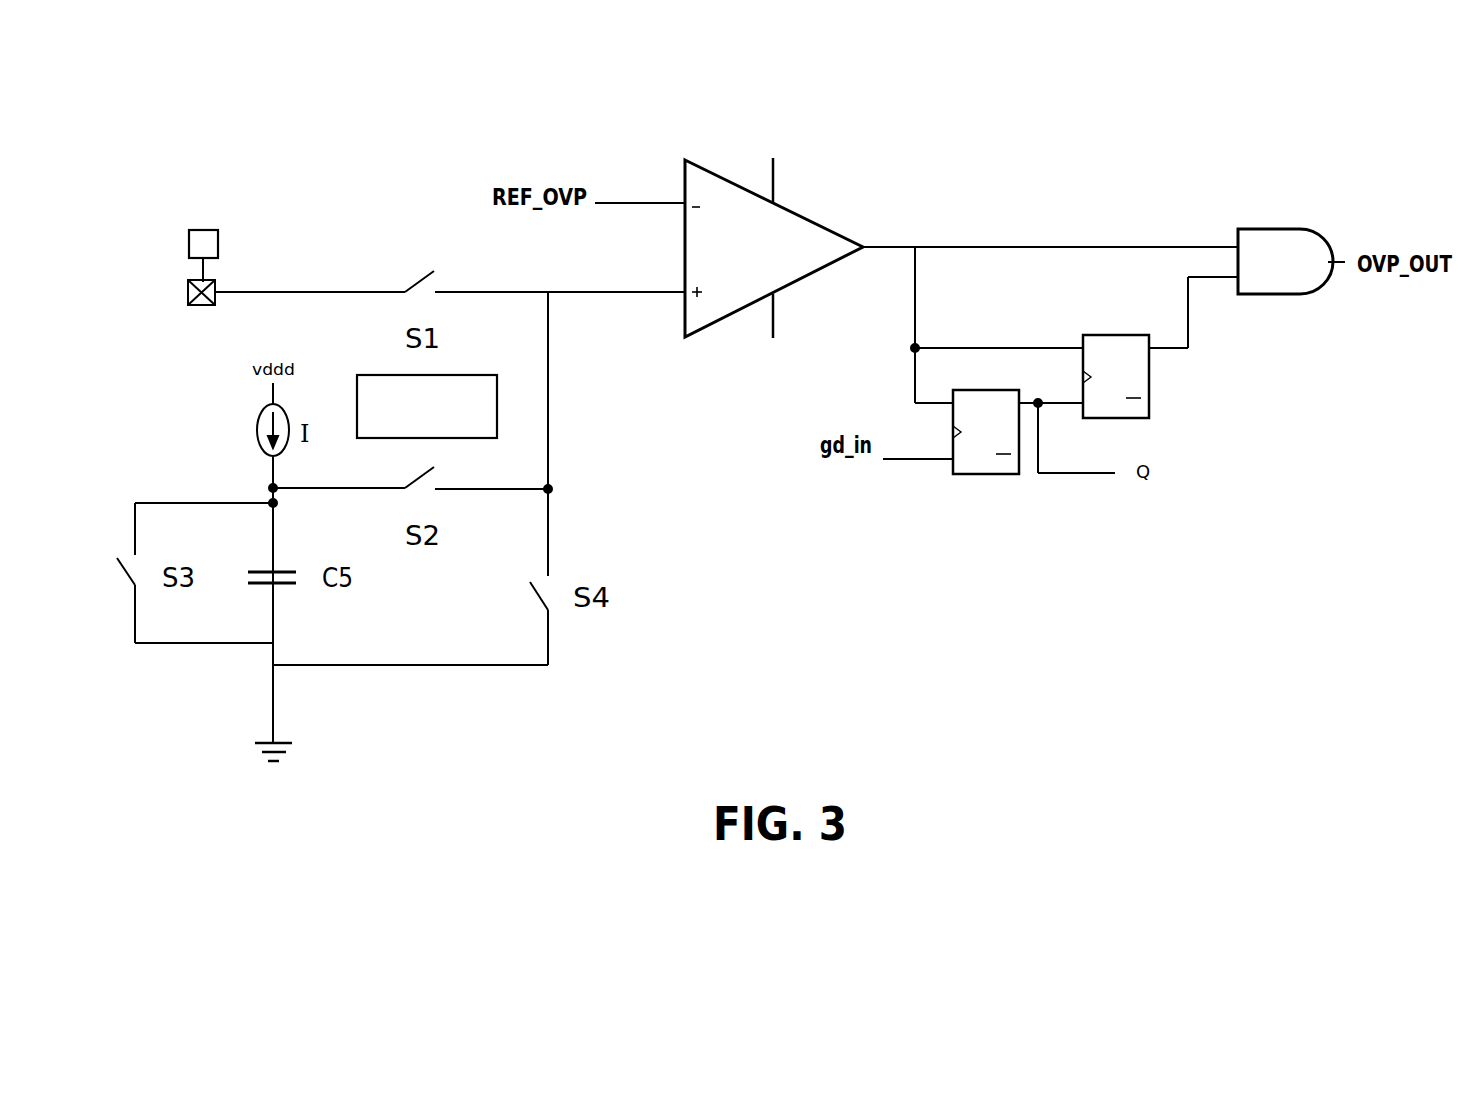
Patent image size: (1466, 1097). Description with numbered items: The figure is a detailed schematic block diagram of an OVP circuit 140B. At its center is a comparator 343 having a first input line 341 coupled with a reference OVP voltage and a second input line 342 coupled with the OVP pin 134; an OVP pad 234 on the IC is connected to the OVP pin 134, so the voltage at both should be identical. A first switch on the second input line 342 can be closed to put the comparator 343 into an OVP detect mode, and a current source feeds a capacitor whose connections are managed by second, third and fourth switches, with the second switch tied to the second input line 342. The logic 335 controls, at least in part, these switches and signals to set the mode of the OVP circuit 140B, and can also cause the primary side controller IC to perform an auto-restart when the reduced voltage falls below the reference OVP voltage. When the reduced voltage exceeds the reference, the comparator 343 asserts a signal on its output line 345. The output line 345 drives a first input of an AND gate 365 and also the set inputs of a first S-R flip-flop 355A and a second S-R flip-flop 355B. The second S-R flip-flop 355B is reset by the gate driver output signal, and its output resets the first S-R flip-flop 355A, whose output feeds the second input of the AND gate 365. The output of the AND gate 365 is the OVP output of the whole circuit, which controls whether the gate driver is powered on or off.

The OVP pin 134 is at (204, 230).
The OVP pad 234 is at (202, 305).
The logic 335 is at (427, 406).
The first input line 341 is at (605, 203).
The second input line 342 is at (590, 292).
The comparator 343 is at (809, 218).
The output line 345 is at (1045, 247).
The first set-reset (S-R) flip-flop 355A is at (1149, 383).
The second S-R flip-flop 355B is at (991, 474).
The AND gate 365 is at (1290, 232).
The OVP circuit 140B is at (1222, 679).